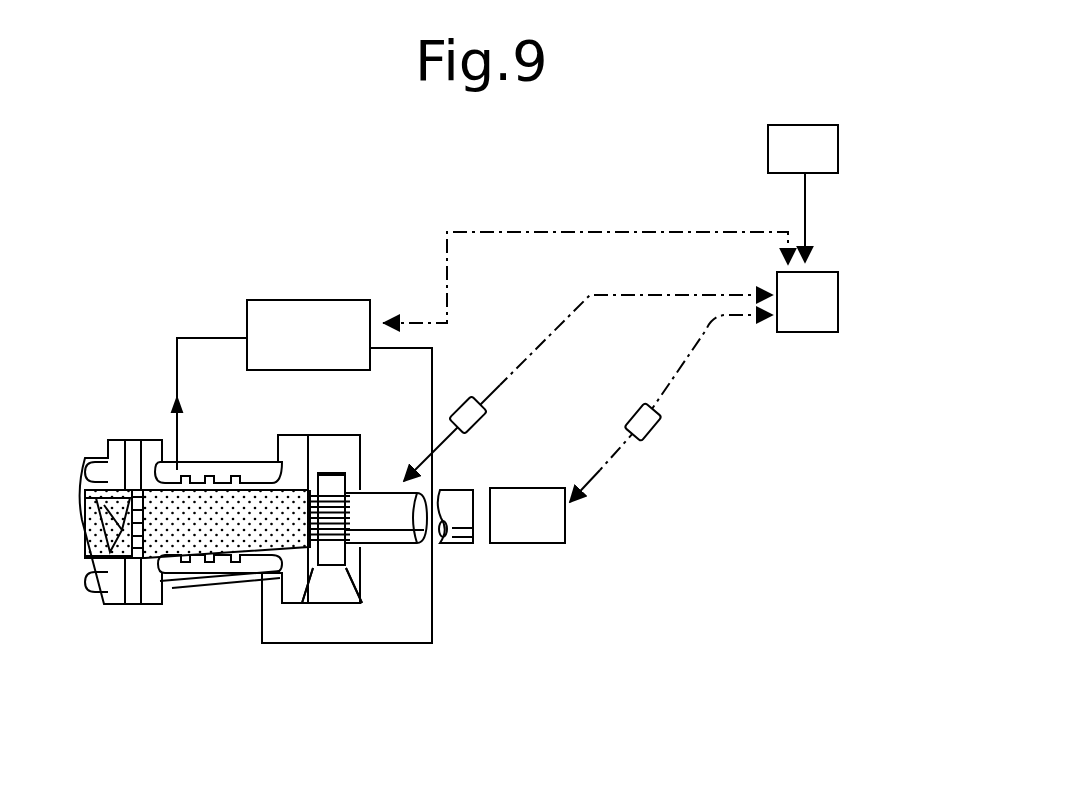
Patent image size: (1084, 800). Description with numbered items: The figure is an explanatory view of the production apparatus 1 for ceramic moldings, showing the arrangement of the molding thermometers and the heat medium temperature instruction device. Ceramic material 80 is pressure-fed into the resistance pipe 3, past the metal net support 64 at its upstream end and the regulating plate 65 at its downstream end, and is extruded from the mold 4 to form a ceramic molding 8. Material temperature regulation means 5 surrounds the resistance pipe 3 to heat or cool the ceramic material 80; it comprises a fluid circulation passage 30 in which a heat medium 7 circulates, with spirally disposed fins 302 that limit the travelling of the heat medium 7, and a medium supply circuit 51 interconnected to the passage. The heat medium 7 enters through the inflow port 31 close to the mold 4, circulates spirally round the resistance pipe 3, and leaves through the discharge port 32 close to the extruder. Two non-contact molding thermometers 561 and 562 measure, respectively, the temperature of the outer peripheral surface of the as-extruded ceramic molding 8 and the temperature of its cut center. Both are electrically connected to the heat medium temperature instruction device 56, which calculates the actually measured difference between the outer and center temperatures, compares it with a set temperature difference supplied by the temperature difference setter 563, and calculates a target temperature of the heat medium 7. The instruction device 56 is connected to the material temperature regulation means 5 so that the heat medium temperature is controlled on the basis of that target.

The production apparatus 1 is at (236, 210).
The resistance pipe 3 is at (214, 534).
The fluid circulation passage 30 is at (217, 467).
The fins 302 is at (187, 467).
The inflow port 31 is at (258, 584).
The discharge port 32 is at (178, 467).
The mold 4 is at (352, 577).
The material temperature regulation means 5 is at (296, 282).
The medium supply circuit 51 is at (352, 318).
The heat medium temperature instruction device 56 is at (838, 303).
The molding thermometer 561 is at (480, 426).
The molding thermometer 562 is at (660, 428).
The temperature difference setter 563 is at (838, 150).
The metal net support 64 is at (132, 612).
The regulating plate 65 is at (310, 573).
The heat medium 7 is at (177, 360).
The ceramic molding 8 is at (394, 520).
The ceramic material 80 is at (300, 490).